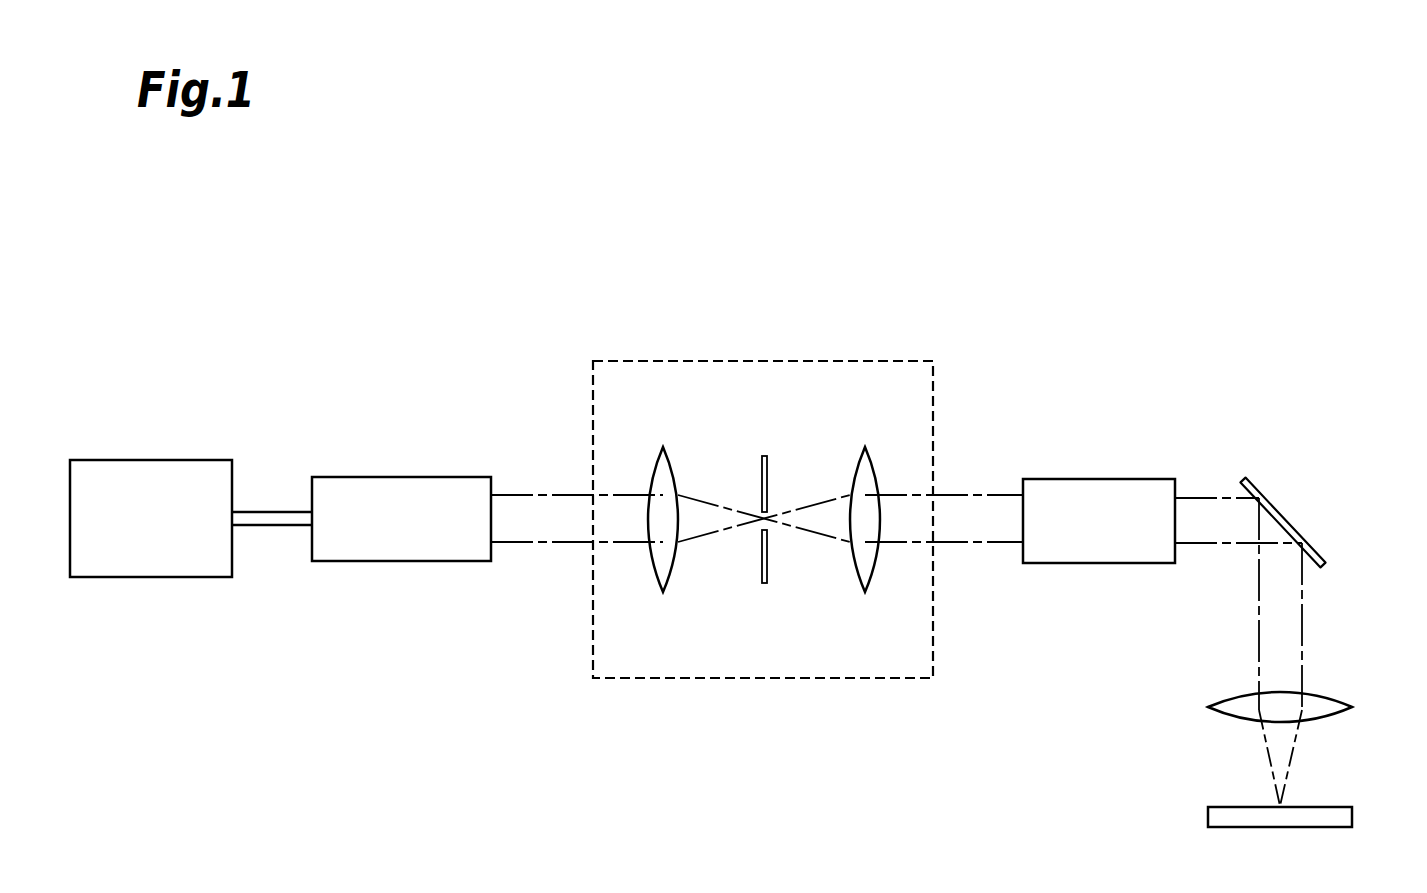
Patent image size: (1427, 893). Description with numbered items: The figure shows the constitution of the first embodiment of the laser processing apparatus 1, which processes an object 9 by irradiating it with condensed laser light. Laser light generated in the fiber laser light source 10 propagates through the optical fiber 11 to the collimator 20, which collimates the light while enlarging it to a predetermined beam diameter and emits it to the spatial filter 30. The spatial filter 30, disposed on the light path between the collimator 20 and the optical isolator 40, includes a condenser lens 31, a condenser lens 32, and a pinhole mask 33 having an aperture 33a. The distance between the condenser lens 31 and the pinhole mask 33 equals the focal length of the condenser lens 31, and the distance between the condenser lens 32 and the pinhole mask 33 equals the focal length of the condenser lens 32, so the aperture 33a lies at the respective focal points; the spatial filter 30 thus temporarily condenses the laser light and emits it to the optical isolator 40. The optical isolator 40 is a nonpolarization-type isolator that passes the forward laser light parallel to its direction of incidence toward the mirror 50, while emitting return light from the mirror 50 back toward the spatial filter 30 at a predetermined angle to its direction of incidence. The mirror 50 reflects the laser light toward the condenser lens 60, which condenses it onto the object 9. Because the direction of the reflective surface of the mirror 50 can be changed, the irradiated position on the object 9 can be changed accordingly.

The laser processing apparatus 1 is at (1260, 290).
The object 9 is at (1325, 807).
The fiber laser light source 10 is at (140, 460).
The optical fiber 11 is at (270, 511).
The collimator 20 is at (397, 476).
The spatial filter 30 is at (758, 360).
The condenser lens 31 is at (676, 568).
The condenser lens 32 is at (876, 568).
The pinhole mask 33 is at (768, 583).
The aperture 33a is at (762, 512).
The optical isolator 40 is at (1100, 478).
The mirror 50 is at (1252, 485).
The condenser lens 60 is at (1325, 694).